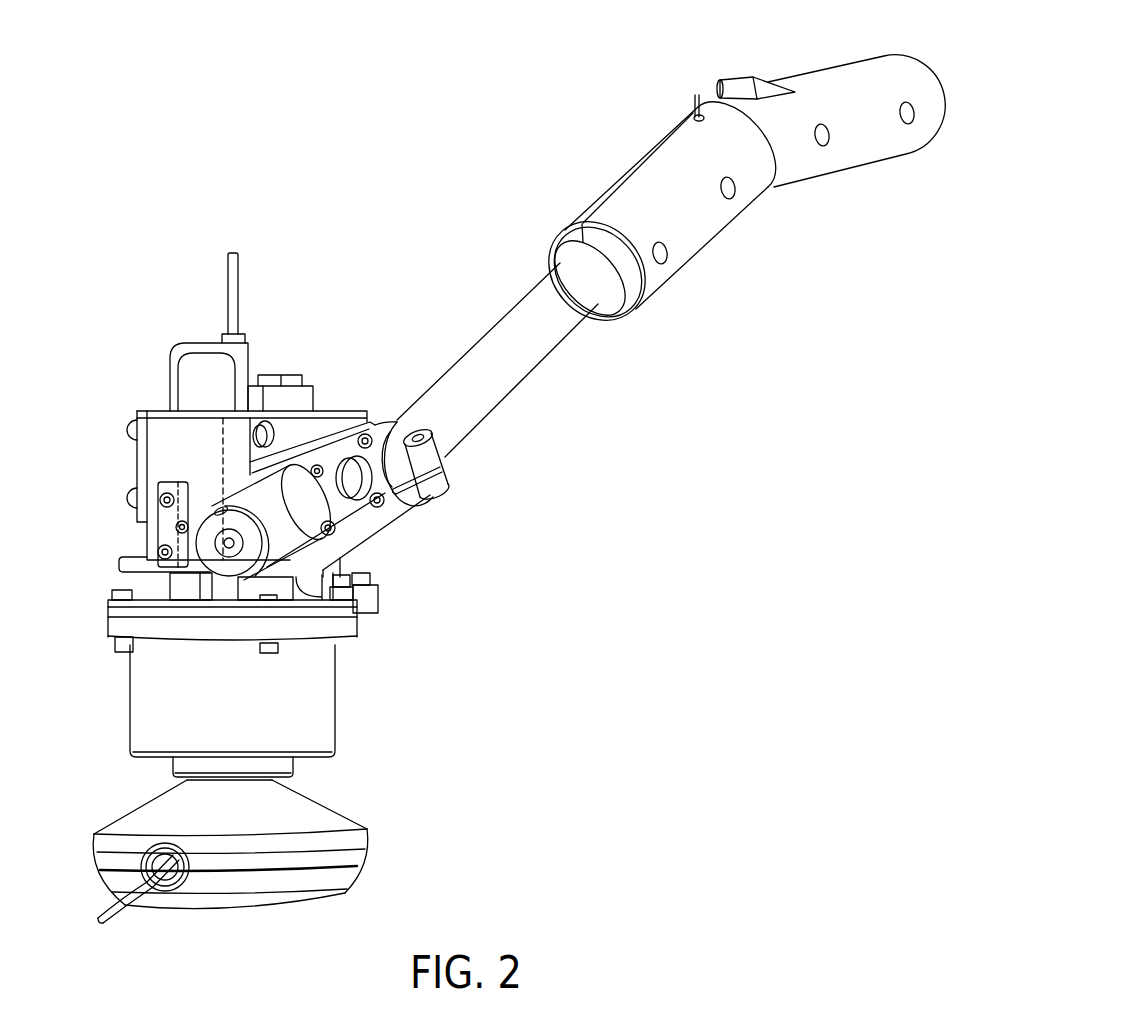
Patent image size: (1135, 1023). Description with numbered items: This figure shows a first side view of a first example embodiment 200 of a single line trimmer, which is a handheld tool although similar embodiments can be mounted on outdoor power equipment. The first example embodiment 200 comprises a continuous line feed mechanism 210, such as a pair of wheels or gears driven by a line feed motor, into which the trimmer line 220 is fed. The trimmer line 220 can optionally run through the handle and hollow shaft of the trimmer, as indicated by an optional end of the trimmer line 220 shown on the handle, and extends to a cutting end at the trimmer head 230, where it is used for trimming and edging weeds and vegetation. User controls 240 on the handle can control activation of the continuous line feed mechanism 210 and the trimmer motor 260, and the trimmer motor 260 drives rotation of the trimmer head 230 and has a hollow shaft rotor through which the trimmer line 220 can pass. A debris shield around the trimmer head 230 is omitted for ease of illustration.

The first example embodiment 200 is at (226, 85).
The continuous line feed mechanism 210 is at (137, 472).
The trimmer line 220 is at (692, 100).
The trimmer head 230 is at (118, 817).
The user controls 240 is at (716, 92).
The trimmer motor 260 is at (130, 700).